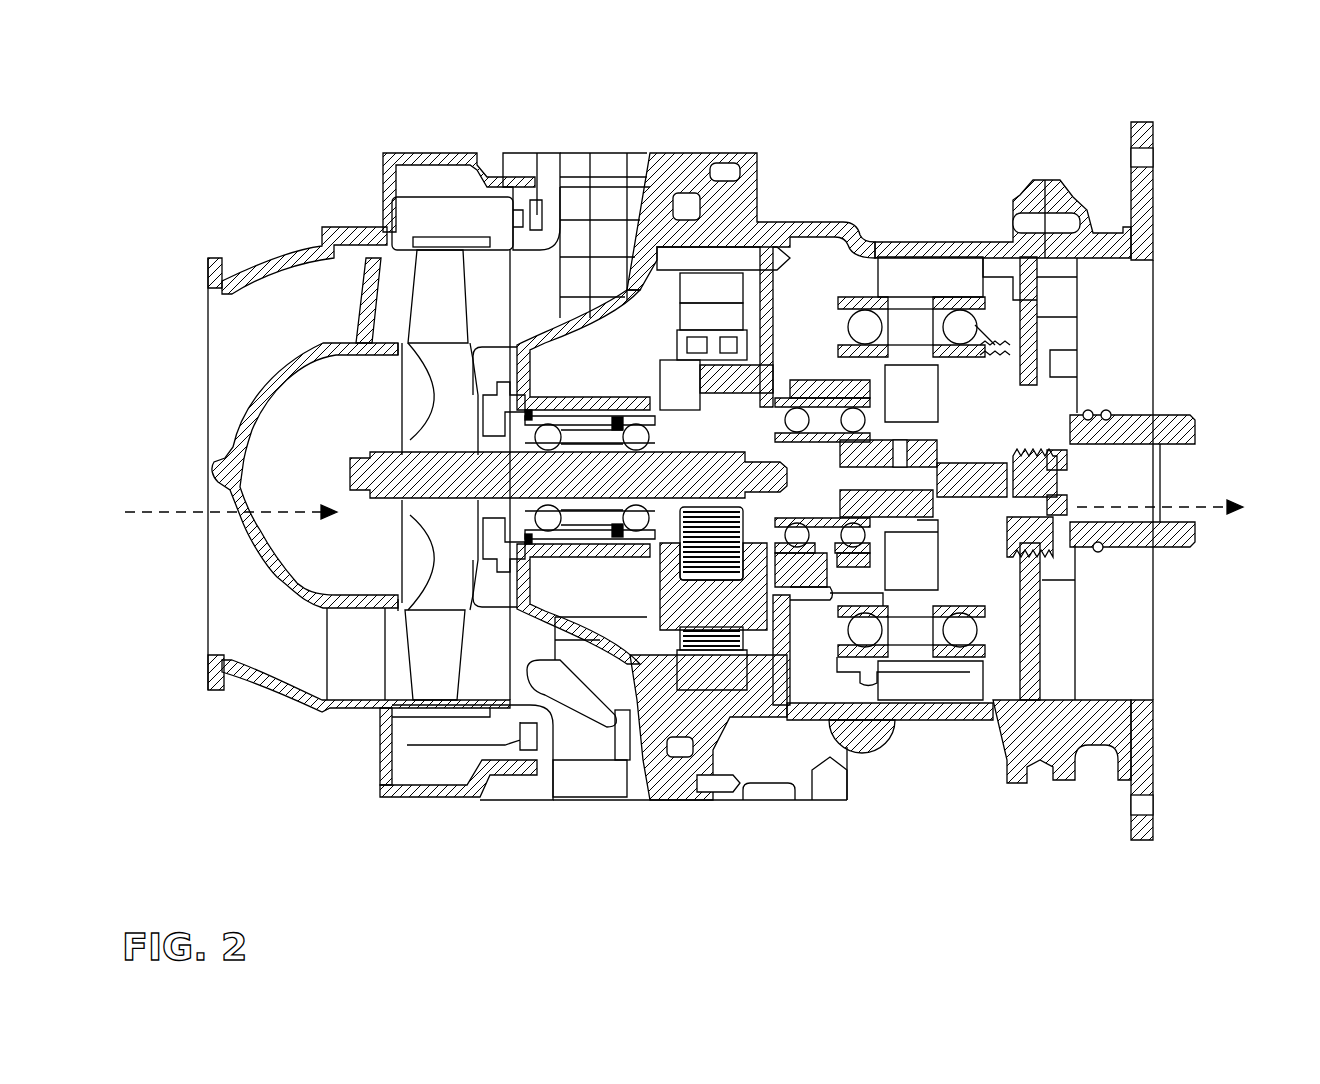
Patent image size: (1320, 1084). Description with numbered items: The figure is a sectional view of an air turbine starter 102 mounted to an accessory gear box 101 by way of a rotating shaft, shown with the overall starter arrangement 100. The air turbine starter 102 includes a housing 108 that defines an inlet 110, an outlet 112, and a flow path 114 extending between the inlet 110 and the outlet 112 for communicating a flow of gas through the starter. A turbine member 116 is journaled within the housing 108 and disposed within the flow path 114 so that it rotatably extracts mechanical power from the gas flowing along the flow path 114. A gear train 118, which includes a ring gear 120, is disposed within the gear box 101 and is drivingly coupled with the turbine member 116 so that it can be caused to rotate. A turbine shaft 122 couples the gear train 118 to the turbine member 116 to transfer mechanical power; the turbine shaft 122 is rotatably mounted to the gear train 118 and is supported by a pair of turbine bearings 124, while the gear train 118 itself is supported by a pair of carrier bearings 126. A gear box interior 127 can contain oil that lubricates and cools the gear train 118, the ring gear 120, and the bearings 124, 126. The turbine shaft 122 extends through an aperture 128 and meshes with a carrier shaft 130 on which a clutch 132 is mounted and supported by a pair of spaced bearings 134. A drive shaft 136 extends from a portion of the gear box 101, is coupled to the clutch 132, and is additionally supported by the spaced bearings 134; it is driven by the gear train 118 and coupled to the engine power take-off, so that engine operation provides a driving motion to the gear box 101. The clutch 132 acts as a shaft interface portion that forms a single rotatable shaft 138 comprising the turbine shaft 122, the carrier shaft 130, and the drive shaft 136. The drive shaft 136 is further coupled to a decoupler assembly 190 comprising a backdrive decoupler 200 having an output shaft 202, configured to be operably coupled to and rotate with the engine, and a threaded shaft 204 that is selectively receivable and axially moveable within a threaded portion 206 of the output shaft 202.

The compressor assembly 100 is at (731, 153).
The gear box 101 is at (970, 231).
The air turbine starter 102 is at (1100, 66).
The housing 108 is at (550, 158).
The inlet 110 is at (193, 409).
The outlet 112 is at (1216, 424).
The flow path 114 is at (1178, 510).
The turbine member 116 is at (405, 295).
The gear train 118 is at (758, 297).
The ring gear 120 is at (710, 643).
The turbine shaft 122 is at (479, 474).
The turbine bearings 124 is at (562, 540).
The carrier bearings 126 is at (798, 548).
The gear box interior 127 is at (636, 522).
The aperture 128 is at (797, 478).
The carrier shaft 130 is at (1000, 445).
The clutch 132 is at (903, 542).
The spaced bearings 134 is at (872, 640).
The drive shaft 136 is at (1100, 690).
The single rotatable shaft 138 is at (955, 456).
The decoupler assembly 190 is at (1105, 411).
The backdrive decoupler 200 is at (1128, 548).
The output shaft 202 is at (1180, 477).
The threaded shaft 204 is at (1060, 460).
The threaded portion 206 is at (1000, 580).